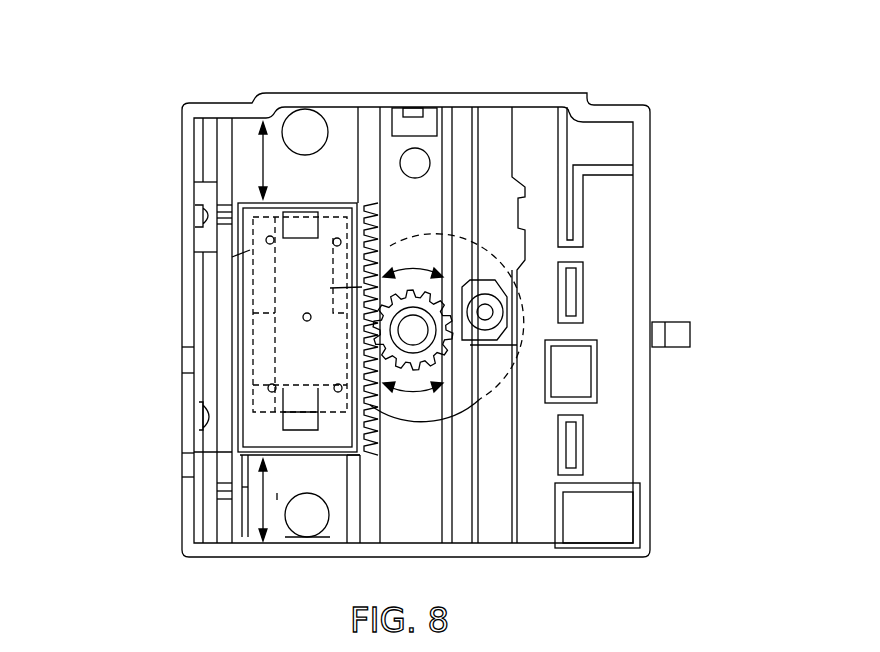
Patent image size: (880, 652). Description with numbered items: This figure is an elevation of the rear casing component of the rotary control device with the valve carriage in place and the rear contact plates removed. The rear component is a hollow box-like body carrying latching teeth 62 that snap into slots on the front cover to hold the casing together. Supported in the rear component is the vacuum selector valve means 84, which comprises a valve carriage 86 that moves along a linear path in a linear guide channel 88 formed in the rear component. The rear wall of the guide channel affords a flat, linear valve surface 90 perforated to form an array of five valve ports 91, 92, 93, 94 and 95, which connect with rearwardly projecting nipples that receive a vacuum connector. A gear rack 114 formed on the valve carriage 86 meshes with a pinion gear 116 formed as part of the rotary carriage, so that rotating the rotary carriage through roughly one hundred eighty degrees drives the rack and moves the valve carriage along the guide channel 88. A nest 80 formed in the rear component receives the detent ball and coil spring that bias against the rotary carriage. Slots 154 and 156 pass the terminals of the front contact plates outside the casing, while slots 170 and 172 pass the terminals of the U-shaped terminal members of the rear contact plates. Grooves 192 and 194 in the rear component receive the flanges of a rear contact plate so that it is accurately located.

The valve port 94 is at (353, 205).
The pinion gear 116 is at (424, 263).
The groove 194 is at (463, 182).
The latching teeth 62 is at (200, 218).
The valve port 92 is at (266, 240).
The groove 192 is at (213, 262).
The valve port 91 is at (303, 317).
The valve port 93 is at (271, 384).
The vacuum selector valve means 84 is at (218, 387).
The valve carriage 86 is at (232, 466).
The linear guide channel 88 is at (242, 487).
The valve surface 90 is at (277, 493).
The valve port 95 is at (347, 455).
The gear rack 114 is at (380, 423).
The nest 80 is at (493, 318).
The slot 172 is at (577, 200).
The slot 154 is at (572, 292).
The slot 170 is at (573, 370).
The slot 156 is at (575, 437).